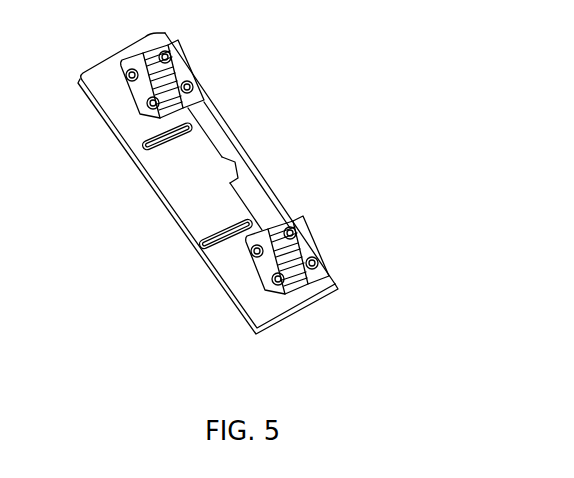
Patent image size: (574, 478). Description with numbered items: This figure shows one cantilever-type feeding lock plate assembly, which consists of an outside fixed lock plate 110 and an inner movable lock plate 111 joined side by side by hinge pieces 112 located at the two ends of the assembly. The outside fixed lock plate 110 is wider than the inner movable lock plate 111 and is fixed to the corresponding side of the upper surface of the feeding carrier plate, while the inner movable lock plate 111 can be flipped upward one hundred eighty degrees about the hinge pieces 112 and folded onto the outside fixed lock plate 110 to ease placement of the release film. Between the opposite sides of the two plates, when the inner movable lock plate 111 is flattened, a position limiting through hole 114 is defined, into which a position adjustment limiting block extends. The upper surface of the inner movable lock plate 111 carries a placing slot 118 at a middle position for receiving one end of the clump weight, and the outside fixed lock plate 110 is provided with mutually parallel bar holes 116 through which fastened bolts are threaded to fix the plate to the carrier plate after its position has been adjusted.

The outside fixed lock plate 110 is at (188, 192).
The inner movable lock plate 111 is at (272, 198).
The hinge pieces 112 is at (303, 246).
The position limiting through hole 114 is at (210, 130).
The bar holes 116 is at (212, 252).
The placing slot 118 is at (252, 158).